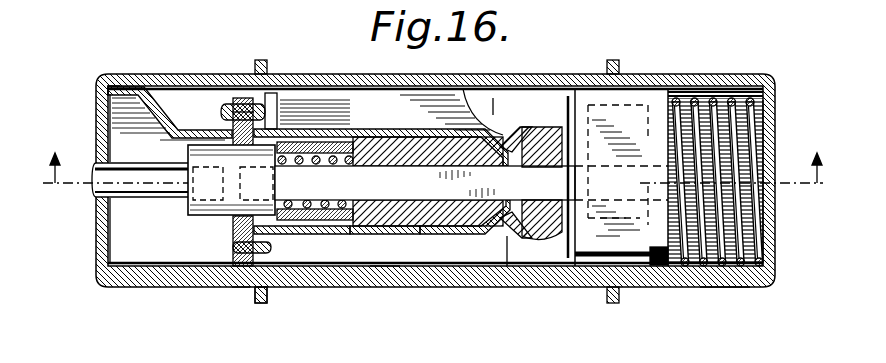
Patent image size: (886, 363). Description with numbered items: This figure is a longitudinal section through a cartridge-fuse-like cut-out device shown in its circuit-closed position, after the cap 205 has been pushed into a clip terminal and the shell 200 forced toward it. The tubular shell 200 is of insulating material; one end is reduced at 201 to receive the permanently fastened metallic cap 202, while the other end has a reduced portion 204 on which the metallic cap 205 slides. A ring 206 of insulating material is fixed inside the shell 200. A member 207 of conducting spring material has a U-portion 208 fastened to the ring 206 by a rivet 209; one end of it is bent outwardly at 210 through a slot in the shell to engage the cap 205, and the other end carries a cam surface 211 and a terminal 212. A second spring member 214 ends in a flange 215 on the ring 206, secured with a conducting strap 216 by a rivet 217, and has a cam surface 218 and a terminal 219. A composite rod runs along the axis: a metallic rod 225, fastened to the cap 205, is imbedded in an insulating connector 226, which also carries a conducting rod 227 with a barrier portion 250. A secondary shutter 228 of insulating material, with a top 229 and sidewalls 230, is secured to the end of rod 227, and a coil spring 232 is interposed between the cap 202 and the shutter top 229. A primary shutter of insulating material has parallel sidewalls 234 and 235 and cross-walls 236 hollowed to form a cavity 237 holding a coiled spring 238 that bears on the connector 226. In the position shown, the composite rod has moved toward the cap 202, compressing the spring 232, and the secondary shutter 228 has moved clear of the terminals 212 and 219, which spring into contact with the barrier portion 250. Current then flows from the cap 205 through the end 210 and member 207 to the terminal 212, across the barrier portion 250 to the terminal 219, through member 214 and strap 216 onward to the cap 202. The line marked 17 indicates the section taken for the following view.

The section line 17- 17 is at (431, 187).
The tubular shell 200 is at (414, 278).
The reduced end portion of shell 201 is at (689, 88).
The metallic cap 202 is at (716, 287).
The reduced diameter portion 204 is at (198, 87).
The slidable metallic cap 205 is at (116, 74).
The ring 206 is at (232, 232).
The conducting spring member 207 is at (294, 128).
The U-portion 208 is at (243, 98).
The rivet 209 is at (272, 98).
The outwardly bent end 210 is at (109, 116).
The cam surface 211 is at (468, 100).
The terminal 212 is at (540, 140).
The spring member 214 is at (387, 272).
The flange 215 is at (256, 288).
The conducting strap 216 is at (270, 247).
The rivet 217 is at (238, 288).
The cam surface 218 is at (493, 267).
The terminal 219 is at (543, 228).
The metallic rod 225 is at (177, 190).
The insulating connector 226 is at (208, 214).
The metallic rod 227 is at (448, 194).
The secondary shutter 228 is at (626, 123).
The shutter top 229 is at (658, 266).
The sidewalls 230 is at (594, 116).
The coil spring 232 is at (750, 136).
The sidewall of primary shutter 234 is at (495, 98).
The sidewall of primary shutter 235 is at (392, 262).
The cross-walls 236 is at (396, 152).
The cavity 237 is at (354, 198).
The coiled spring 238 is at (323, 140).
The barrier portion 250 is at (518, 178).